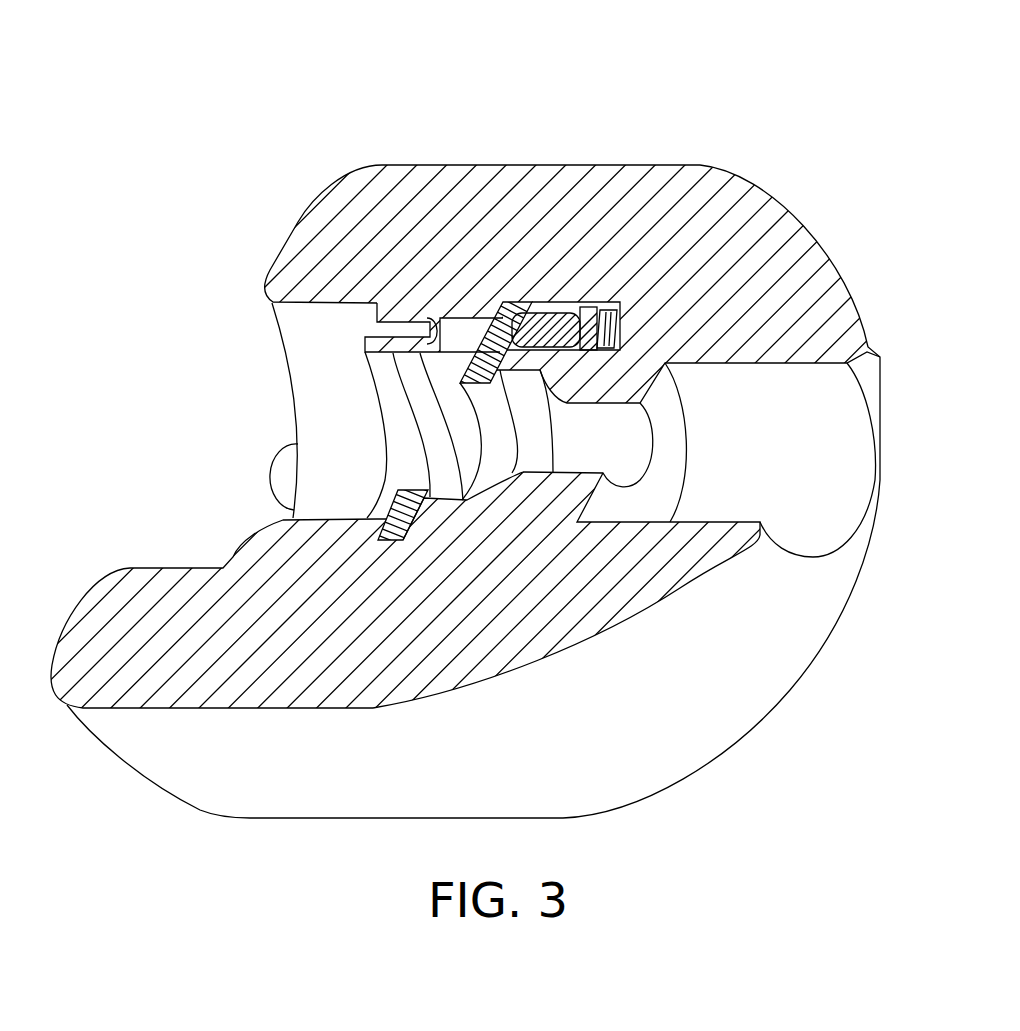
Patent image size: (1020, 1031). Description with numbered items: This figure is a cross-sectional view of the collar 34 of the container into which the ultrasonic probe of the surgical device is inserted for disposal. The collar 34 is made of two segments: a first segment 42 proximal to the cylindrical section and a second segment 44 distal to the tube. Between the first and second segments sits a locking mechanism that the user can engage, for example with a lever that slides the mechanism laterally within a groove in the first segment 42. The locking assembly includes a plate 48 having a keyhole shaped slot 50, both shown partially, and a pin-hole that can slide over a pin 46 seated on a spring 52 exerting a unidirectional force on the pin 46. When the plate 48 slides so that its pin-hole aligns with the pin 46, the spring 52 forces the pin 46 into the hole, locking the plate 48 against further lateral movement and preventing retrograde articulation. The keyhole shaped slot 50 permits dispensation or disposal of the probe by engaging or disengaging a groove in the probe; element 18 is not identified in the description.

The collar 34 is at (903, 105).
The second segment 44 is at (375, 163).
The first segment 42 is at (703, 167).
The pin 46 is at (585, 300).
The spring 52 is at (610, 317).
The keyhole shaped slot 50 is at (397, 487).
The bore 18 is at (275, 466).
The plate 48 is at (375, 568).